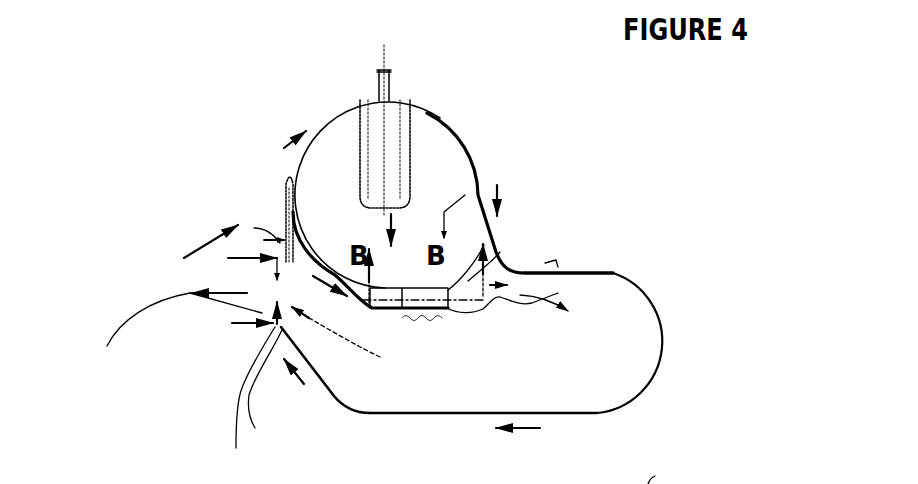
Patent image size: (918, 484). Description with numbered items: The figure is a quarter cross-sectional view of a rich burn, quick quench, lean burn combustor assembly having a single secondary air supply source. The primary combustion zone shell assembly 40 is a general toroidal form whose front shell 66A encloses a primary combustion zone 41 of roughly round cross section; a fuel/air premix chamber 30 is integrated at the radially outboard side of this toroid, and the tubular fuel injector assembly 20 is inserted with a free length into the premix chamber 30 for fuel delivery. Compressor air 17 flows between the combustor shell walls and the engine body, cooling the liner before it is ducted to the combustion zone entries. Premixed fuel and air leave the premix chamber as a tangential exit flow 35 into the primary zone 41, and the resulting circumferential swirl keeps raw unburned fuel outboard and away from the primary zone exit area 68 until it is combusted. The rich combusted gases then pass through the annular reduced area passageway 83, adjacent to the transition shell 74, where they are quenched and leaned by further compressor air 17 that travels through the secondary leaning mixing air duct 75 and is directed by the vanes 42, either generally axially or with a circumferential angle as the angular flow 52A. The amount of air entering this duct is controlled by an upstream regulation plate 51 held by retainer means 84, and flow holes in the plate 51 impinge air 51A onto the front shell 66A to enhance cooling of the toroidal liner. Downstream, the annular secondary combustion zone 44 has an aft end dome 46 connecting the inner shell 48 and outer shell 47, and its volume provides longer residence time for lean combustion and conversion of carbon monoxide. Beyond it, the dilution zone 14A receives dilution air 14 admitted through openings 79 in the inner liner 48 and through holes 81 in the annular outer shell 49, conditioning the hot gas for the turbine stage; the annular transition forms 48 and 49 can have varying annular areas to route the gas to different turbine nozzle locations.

The dilution air 14 is at (275, 262).
The dilution zone 14A is at (277, 262).
The compressor air 17 is at (284, 150).
The fuel injector assembly 20 is at (376, 81).
The F/A premix chamber 30 is at (402, 143).
The tangential exit f/a flow 35 is at (440, 188).
The shell assembly 40 is at (460, 135).
The primary combustion zone 41 is at (438, 185).
The vanes 42 is at (498, 250).
The secondary combustion zone 44 is at (583, 343).
The aft end dome 46 is at (660, 357).
The outer shell 47 is at (578, 273).
The inner shell 48 is at (457, 413).
The annular outer shell 49 is at (373, 310).
The upstream regulation plate 51 is at (283, 212).
The impingement air 51A is at (282, 218).
The angular secondary air flow 52A is at (503, 256).
The front shell 66A is at (328, 117).
The primary zone exit area 68 is at (405, 236).
The transition shell 74 is at (505, 248).
The secondary leaning mixing air duct 75 is at (308, 252).
The openings 79 is at (249, 399).
The holes 81 is at (276, 266).
The annular reduced area passageway 83 is at (538, 289).
The retainer means 84 is at (285, 186).